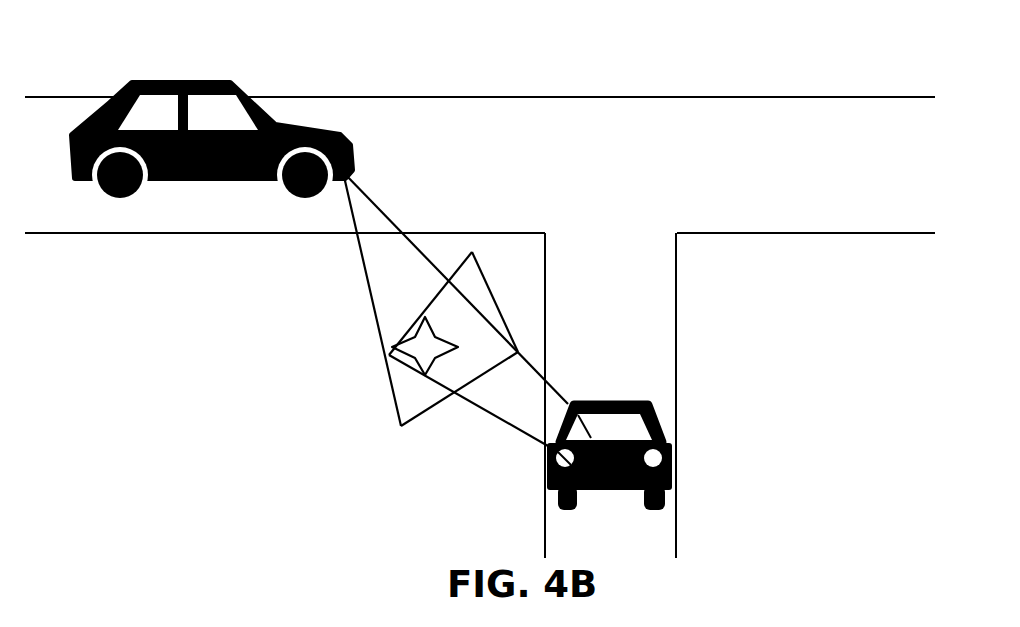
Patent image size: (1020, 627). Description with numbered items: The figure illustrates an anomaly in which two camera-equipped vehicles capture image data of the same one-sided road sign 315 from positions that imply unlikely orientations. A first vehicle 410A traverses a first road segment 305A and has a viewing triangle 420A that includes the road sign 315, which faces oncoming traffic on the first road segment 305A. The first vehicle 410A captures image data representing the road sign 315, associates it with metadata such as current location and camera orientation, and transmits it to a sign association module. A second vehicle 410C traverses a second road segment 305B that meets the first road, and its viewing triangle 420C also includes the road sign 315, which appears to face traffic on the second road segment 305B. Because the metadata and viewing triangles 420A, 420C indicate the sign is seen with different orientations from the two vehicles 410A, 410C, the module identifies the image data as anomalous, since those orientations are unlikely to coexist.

The first road segment 305A is at (553, 97).
The second road segment 305B is at (677, 530).
The first vehicle 410A is at (350, 153).
The second vehicle 410C is at (673, 450).
The viewing triangle 420A is at (408, 395).
The viewing triangle 420C is at (507, 382).
The road sign 315 is at (432, 376).